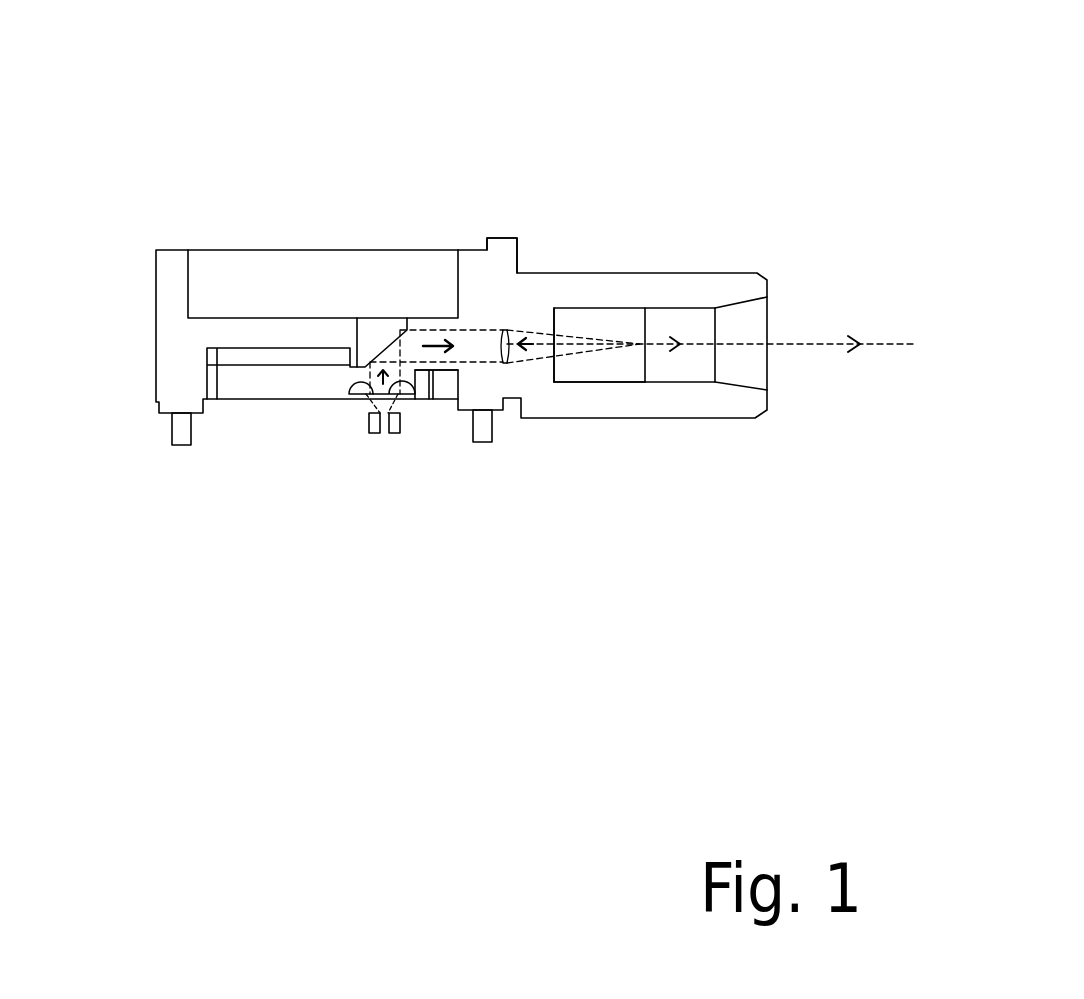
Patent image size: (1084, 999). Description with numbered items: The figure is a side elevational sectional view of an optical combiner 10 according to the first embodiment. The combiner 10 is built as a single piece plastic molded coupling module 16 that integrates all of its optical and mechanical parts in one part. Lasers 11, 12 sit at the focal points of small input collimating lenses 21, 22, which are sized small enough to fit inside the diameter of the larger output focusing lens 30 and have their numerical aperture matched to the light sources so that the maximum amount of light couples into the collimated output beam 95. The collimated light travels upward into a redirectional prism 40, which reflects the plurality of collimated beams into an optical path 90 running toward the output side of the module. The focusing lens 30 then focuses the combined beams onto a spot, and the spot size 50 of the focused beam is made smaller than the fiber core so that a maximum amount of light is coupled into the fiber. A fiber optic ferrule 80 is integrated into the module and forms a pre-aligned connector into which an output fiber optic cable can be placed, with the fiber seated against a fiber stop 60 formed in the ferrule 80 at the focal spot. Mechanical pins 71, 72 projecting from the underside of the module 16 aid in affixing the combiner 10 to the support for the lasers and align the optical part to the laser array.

The optical combiner 10 is at (507, 153).
The laser 11 is at (375, 433).
The laser 12 is at (395, 433).
The coupling module 16 is at (490, 262).
The input collimating lens 21 is at (347, 397).
The input collimating lens 22 is at (417, 397).
The output focusing lens 30 is at (525, 347).
The prism 40 is at (387, 343).
The spot size 50 is at (555, 342).
The fiber stop 60 is at (555, 375).
The pin 71 is at (183, 445).
The pin 72 is at (483, 442).
The ferrule 80 is at (732, 285).
The optical path 90 is at (435, 342).
The collimated output beam 95 is at (818, 347).